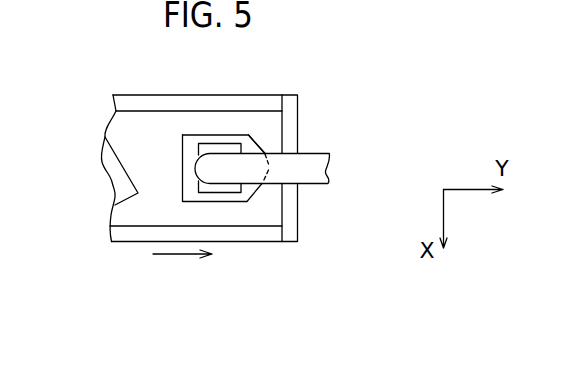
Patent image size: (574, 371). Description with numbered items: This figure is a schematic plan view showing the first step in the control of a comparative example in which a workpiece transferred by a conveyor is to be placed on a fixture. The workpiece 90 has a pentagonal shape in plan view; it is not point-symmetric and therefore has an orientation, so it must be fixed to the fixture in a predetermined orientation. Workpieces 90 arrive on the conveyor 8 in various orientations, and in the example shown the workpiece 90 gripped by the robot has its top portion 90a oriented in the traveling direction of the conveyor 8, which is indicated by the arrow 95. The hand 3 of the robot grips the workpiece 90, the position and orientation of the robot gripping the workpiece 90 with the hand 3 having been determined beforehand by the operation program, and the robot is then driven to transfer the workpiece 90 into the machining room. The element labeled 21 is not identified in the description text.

The conveyor 8 is at (129, 236).
The workpiece 90 is at (193, 145).
The top portion 90a is at (272, 153).
The hand 3 is at (230, 193).
The shaft 21 is at (305, 163).
The arrow 95 is at (177, 256).